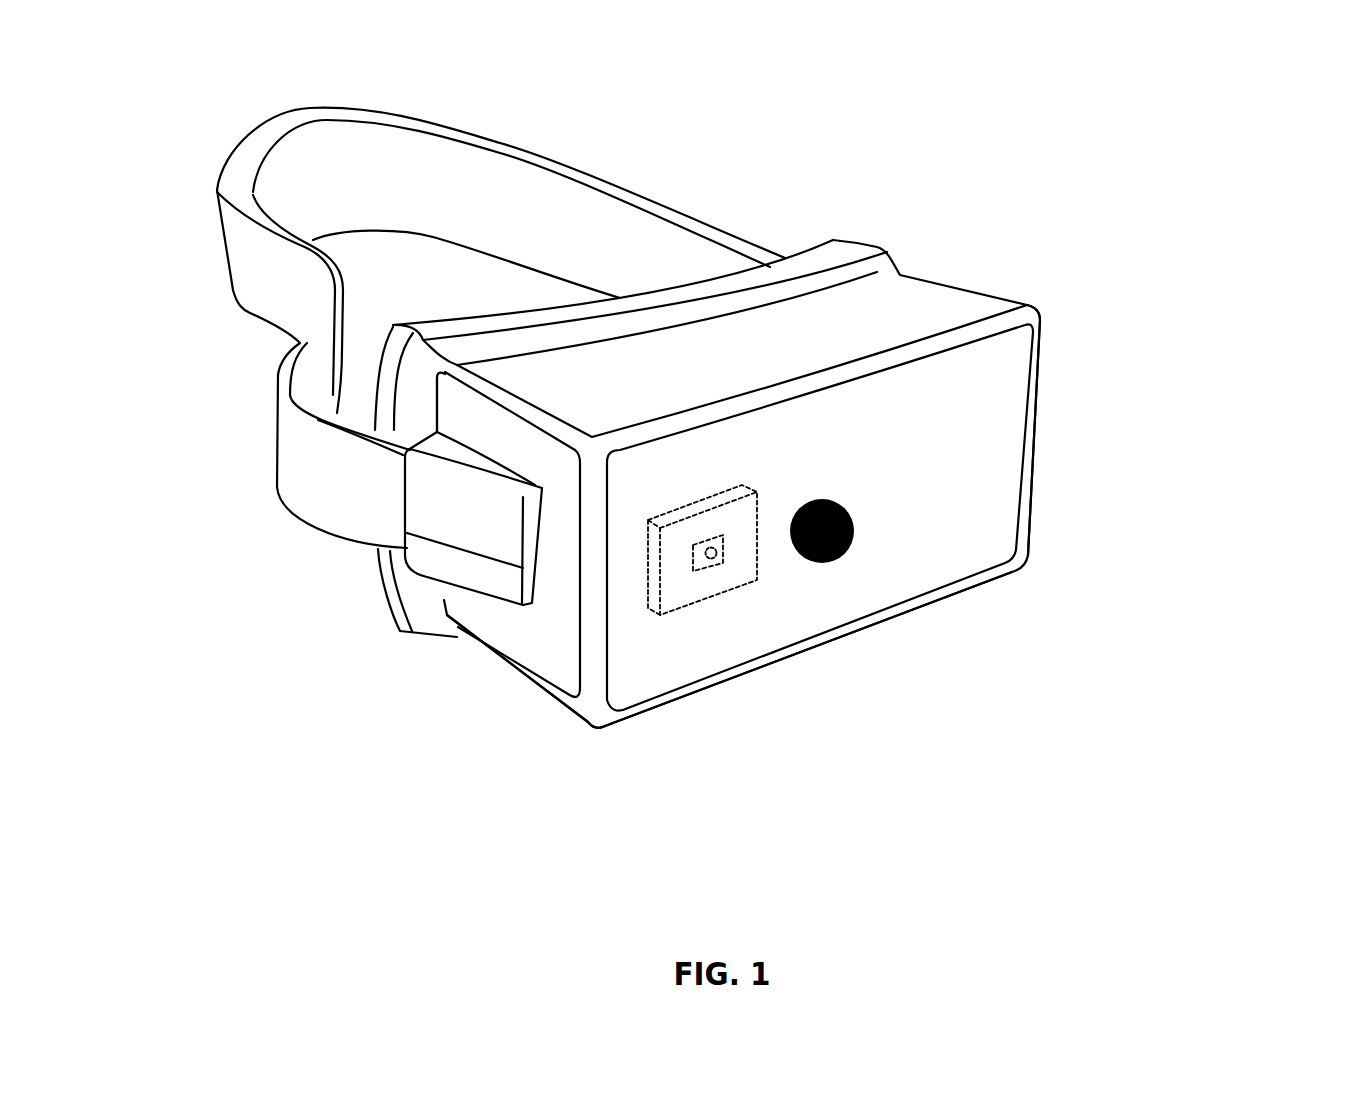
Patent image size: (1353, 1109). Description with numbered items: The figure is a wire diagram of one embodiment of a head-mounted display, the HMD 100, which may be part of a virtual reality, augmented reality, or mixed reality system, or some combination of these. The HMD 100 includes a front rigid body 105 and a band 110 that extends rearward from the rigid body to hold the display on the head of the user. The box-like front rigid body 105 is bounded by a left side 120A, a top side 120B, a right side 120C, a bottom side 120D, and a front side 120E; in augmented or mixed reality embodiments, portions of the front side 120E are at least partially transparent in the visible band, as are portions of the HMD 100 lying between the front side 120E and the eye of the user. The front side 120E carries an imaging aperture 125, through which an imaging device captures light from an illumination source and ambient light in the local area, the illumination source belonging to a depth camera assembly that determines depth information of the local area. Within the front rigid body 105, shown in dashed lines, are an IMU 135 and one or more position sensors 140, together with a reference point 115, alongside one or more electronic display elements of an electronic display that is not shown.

The HMD 100 is at (702, 494).
The front rigid body 105 is at (702, 507).
The band 110 is at (641, 195).
The reference point 115 is at (711, 560).
The left side 120A is at (997, 293).
The top side 120B is at (547, 376).
The right side 120C is at (547, 632).
The bottom side 120D is at (493, 668).
The front side 120E is at (632, 668).
The imaging aperture 125 is at (852, 531).
The IMU 135 is at (757, 567).
The position sensors 140 is at (693, 572).